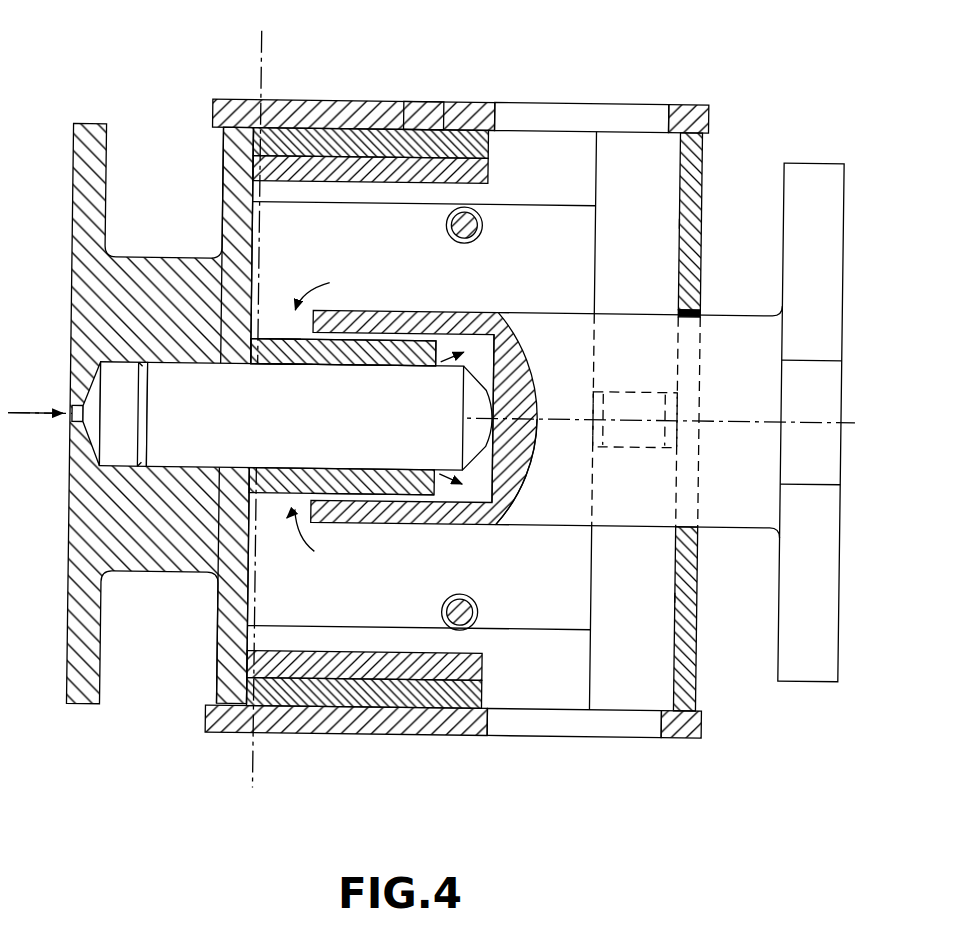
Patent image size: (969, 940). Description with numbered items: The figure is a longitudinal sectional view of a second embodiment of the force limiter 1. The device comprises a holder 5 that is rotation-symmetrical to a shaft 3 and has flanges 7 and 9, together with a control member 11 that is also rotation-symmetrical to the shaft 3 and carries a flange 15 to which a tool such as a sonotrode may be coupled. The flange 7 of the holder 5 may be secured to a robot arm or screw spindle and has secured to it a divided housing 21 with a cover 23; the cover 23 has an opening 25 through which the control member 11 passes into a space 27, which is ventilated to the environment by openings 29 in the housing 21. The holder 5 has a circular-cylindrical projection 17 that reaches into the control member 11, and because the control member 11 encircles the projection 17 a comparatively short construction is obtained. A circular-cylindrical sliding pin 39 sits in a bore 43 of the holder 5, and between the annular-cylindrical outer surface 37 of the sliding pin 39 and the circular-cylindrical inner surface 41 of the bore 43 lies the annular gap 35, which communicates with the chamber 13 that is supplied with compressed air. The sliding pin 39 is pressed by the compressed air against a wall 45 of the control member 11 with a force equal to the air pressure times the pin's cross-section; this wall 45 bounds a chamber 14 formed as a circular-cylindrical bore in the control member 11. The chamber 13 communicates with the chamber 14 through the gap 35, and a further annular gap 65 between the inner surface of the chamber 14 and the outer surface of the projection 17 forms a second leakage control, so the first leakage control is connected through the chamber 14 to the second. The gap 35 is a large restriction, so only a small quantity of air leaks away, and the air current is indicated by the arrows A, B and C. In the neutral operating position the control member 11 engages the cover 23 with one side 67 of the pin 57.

The force limiter 1 is at (420, 101).
The shaft 3 is at (768, 418).
The holder 5 is at (255, 48).
The flange 7 is at (90, 207).
The flange 9 is at (235, 178).
The control member 11 is at (620, 518).
The chamber 13 is at (120, 447).
The chamber 14 is at (480, 378).
The flange 15 is at (808, 185).
The projection 17 is at (373, 343).
The housing 21 is at (338, 101).
The cover 23 is at (700, 674).
The opening 25 is at (700, 300).
The space 27 is at (340, 640).
The openings 29 is at (572, 112).
The gap 35 is at (400, 358).
The outer surface 37 is at (362, 474).
The sliding pin 39 is at (273, 393).
The inner surface 41 is at (352, 368).
The bore 43 is at (343, 352).
The wall 45 is at (497, 462).
The pin 57 is at (653, 184).
The gap 65 is at (405, 497).
The side 67 is at (681, 221).
The arrow A is at (28, 410).
The arrow B is at (463, 422).
The arrow C is at (314, 415).